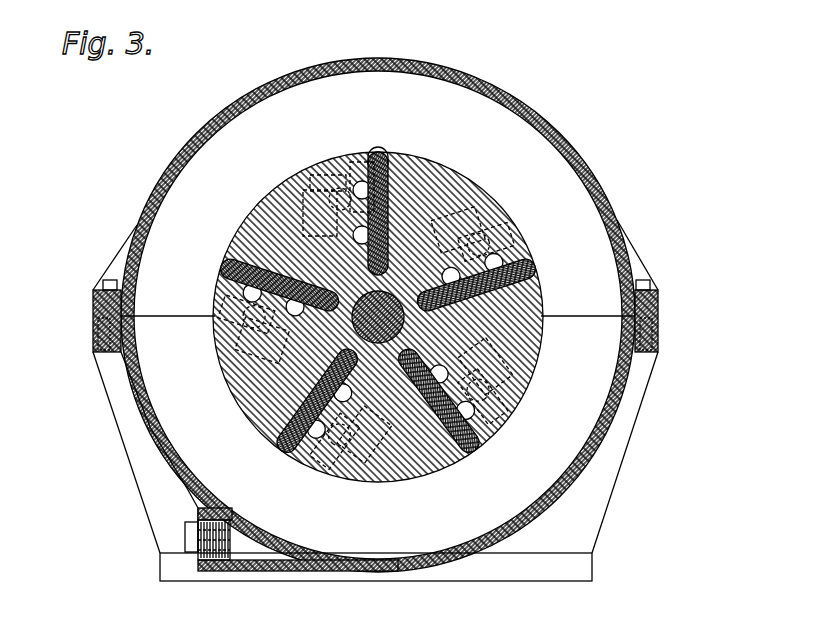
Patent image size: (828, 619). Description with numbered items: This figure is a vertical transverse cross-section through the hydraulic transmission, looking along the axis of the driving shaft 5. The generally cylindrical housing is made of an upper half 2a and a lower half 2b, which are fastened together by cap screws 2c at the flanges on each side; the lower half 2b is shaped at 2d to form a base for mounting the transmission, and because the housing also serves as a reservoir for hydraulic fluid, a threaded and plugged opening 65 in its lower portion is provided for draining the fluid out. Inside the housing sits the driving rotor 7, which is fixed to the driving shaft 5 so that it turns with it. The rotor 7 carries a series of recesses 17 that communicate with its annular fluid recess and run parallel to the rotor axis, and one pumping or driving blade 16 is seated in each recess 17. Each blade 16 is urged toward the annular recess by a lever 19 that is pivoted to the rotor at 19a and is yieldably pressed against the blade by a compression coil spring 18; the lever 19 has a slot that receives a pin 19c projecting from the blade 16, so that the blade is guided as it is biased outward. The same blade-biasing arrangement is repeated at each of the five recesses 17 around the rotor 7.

The upper half of housing 2a is at (531, 103).
The lower half of housing 2b is at (595, 450).
The cap screws 2c is at (99, 282).
The base 2d is at (570, 570).
The driving shaft 5 is at (403, 319).
The driving rotor 7 is at (390, 475).
The pumping or driving blades 16 is at (388, 160).
The recesses 17 is at (388, 200).
The compression coil spring 18 is at (356, 146).
The lever 19 is at (298, 196).
The pivot 19a is at (306, 212).
The pin 19c is at (392, 174).
The threaded and plugged opening 65 is at (218, 560).